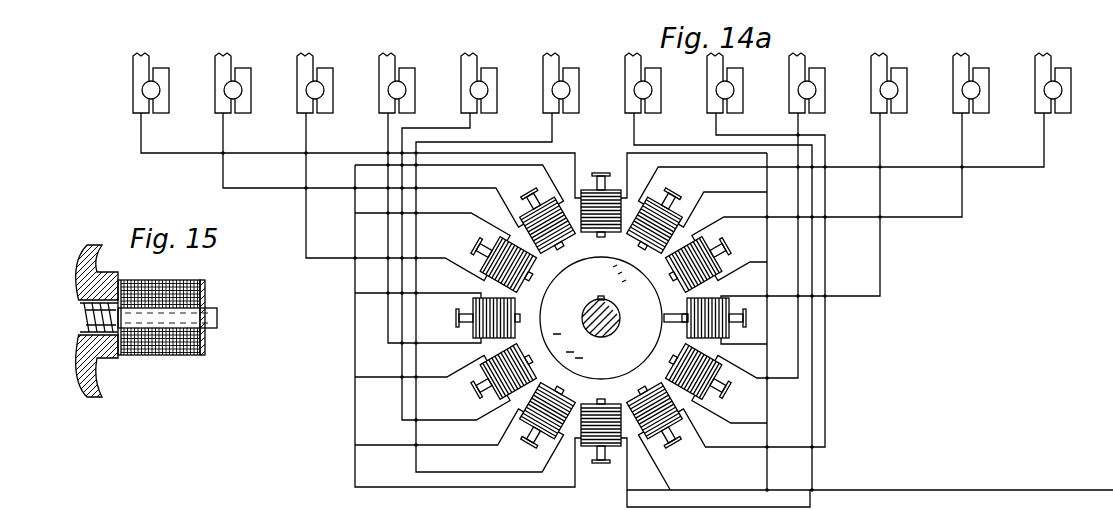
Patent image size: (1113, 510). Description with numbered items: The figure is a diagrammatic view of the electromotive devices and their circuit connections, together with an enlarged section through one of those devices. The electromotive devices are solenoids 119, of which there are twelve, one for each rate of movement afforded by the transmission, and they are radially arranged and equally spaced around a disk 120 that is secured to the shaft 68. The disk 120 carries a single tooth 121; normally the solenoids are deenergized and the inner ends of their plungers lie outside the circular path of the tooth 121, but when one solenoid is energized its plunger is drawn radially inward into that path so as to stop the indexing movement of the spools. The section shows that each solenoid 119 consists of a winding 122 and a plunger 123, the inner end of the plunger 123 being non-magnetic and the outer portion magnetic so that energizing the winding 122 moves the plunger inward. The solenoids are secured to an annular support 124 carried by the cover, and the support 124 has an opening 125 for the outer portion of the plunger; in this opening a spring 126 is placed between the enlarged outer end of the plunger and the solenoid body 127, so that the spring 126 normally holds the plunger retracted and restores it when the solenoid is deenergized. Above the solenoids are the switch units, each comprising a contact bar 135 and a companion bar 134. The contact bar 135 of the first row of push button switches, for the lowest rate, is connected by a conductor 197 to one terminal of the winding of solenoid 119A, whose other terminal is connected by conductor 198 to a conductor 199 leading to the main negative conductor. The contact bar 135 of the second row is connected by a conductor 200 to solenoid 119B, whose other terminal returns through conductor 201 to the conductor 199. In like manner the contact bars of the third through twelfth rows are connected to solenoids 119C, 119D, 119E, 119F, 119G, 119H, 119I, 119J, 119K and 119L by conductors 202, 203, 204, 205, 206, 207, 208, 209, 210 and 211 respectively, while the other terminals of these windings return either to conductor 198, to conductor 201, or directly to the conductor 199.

In FIG. 14A, the contact bar 135 is at (132, 108).
In FIG. 14A, the fixed contact bar 134 is at (162, 110).
In FIG. 14A, the conductor 197 is at (182, 157).
In FIG. 14A, the conductor 200 is at (272, 190).
In FIG. 14A, the conductor 201 is at (352, 345).
In FIG. 14A, the conductor 202 is at (330, 260).
In FIG. 14A, the conductor 203 is at (388, 130).
In FIG. 14A, the conductor 204 is at (472, 127).
In FIG. 14A, the conductor 205 is at (553, 125).
In FIG. 14A, the conductor 206 is at (634, 130).
In FIG. 14A, the conductor 207 is at (742, 134).
In FIG. 14A, the conductor 208 is at (808, 128).
In FIG. 14A, the conductor 209 is at (880, 132).
In FIG. 14A, the conductor 210 is at (962, 135).
In FIG. 14A, the conductor 211 is at (1045, 137).
In FIG. 14A, the conductor 198 is at (767, 478).
In FIG. 14A, the conductor 199 is at (955, 488).
In FIG. 14A, the solenoid 119 is at (555, 478).
In FIG. 15, the solenoid 119 is at (234, 354).
In FIG. 14A, the solenoid 119A is at (610, 200).
In FIG. 14A, the solenoid 119B is at (547, 198).
In FIG. 14A, the solenoid 119C is at (470, 255).
In FIG. 14A, the solenoid 119D is at (472, 327).
In FIG. 14A, the solenoid 119E is at (497, 402).
In FIG. 14A, the solenoid 119F is at (518, 424).
In FIG. 14A, the solenoid 119G is at (612, 440).
In FIG. 14A, the solenoid 119H is at (677, 414).
In FIG. 14A, the solenoid 119I is at (698, 393).
In FIG. 14A, the solenoid 119J is at (713, 306).
In FIG. 14A, the solenoid 119K is at (713, 243).
In FIG. 14A, the solenoid 119L is at (685, 208).
In FIG. 14A, the shaft 68 is at (614, 316).
In FIG. 14A, the disk 120 is at (601, 318).
In FIG. 14A, the tooth 121 is at (664, 319).
In FIG. 15, the winding 122 is at (168, 358).
In FIG. 15, the plunger 123 is at (218, 318).
In FIG. 15, the annular support 124 is at (80, 284).
In FIG. 15, the opening 125 is at (78, 345).
In FIG. 15, the spring 126 is at (80, 319).
In FIG. 15, the solenoid body 127 is at (207, 292).